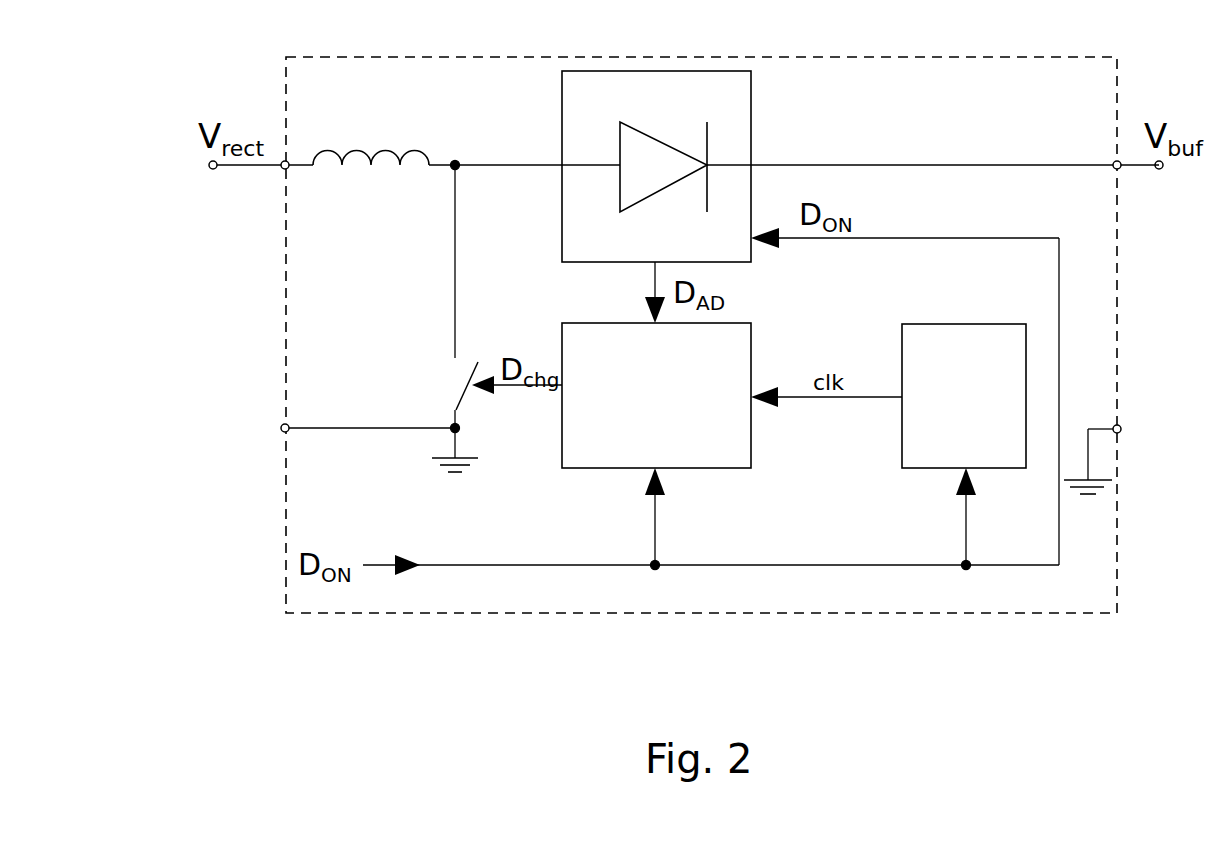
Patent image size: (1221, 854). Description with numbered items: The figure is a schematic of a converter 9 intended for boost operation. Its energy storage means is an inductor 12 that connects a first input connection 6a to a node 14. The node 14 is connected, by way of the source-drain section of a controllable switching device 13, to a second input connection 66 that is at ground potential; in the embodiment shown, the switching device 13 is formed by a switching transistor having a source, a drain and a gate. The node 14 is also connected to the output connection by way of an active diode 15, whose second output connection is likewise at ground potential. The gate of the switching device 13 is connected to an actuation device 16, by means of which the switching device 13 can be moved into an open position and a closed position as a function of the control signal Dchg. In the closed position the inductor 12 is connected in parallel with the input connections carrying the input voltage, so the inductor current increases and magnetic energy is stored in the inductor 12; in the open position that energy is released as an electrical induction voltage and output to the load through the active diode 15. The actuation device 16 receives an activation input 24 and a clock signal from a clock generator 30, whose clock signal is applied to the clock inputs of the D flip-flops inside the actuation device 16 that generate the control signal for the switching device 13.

The power receiving circuit 9 is at (437, 669).
The first input connection 6a is at (282, 170).
The inductor 12 is at (357, 194).
The controllable switching device 13 is at (430, 342).
The node 14 is at (458, 170).
The active diode 15 is at (752, 118).
The actuation device 16 is at (664, 419).
The enable signal input D_ON 24 is at (660, 472).
The clock generator 30 is at (985, 419).
The ground terminal 66 is at (281, 431).